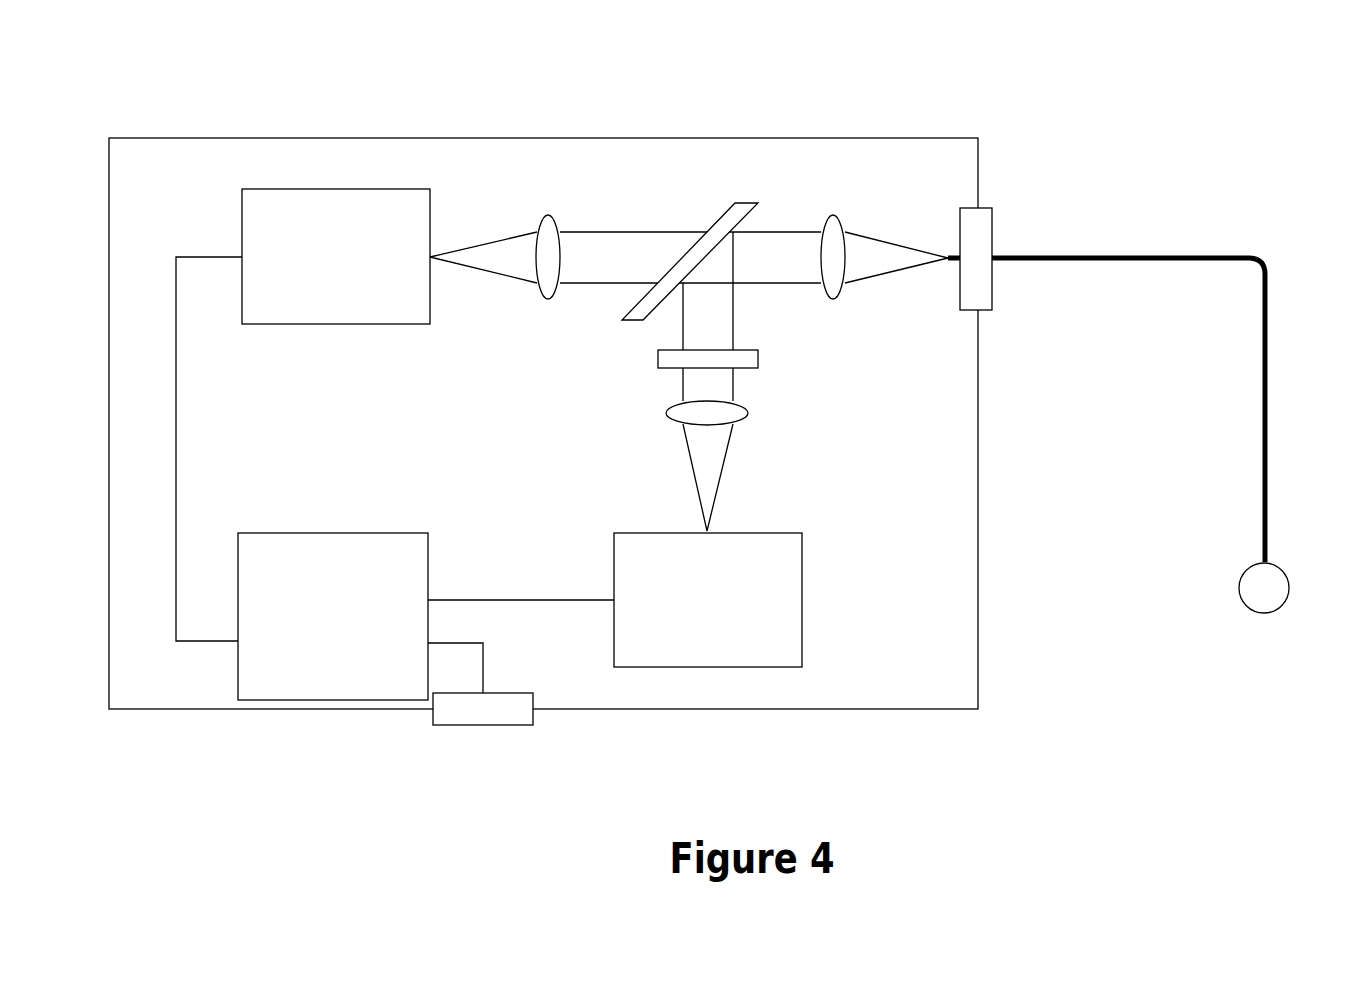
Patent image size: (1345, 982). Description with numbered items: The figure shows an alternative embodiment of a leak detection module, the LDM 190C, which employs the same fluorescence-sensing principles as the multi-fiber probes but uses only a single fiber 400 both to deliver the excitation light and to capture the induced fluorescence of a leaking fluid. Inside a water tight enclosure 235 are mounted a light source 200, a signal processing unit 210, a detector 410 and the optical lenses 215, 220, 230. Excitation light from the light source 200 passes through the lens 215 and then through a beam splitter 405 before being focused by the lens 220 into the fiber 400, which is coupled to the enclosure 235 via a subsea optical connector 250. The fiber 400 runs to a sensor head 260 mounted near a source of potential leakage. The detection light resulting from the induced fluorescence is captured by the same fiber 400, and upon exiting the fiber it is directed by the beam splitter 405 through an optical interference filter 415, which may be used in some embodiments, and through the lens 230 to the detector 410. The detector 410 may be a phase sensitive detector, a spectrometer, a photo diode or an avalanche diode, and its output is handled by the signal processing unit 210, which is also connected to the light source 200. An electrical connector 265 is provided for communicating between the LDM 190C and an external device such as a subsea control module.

The leak detection module 190C is at (72, 105).
The water tight enclosure 235 is at (473, 138).
The light source 200 is at (336, 256).
The signal processing unit 210 is at (333, 616).
The optical lens 215 is at (552, 215).
The beam splitter 405 is at (748, 203).
The optical lens 220 is at (838, 215).
The subsea optical connector 250 is at (985, 208).
The single fiber 400 is at (1100, 256).
The sensor head 260 is at (1263, 613).
The optical interference filter 415 is at (752, 350).
The optical lens 230 is at (745, 406).
The detector 410 is at (708, 600).
The electrical connector 265 is at (517, 693).